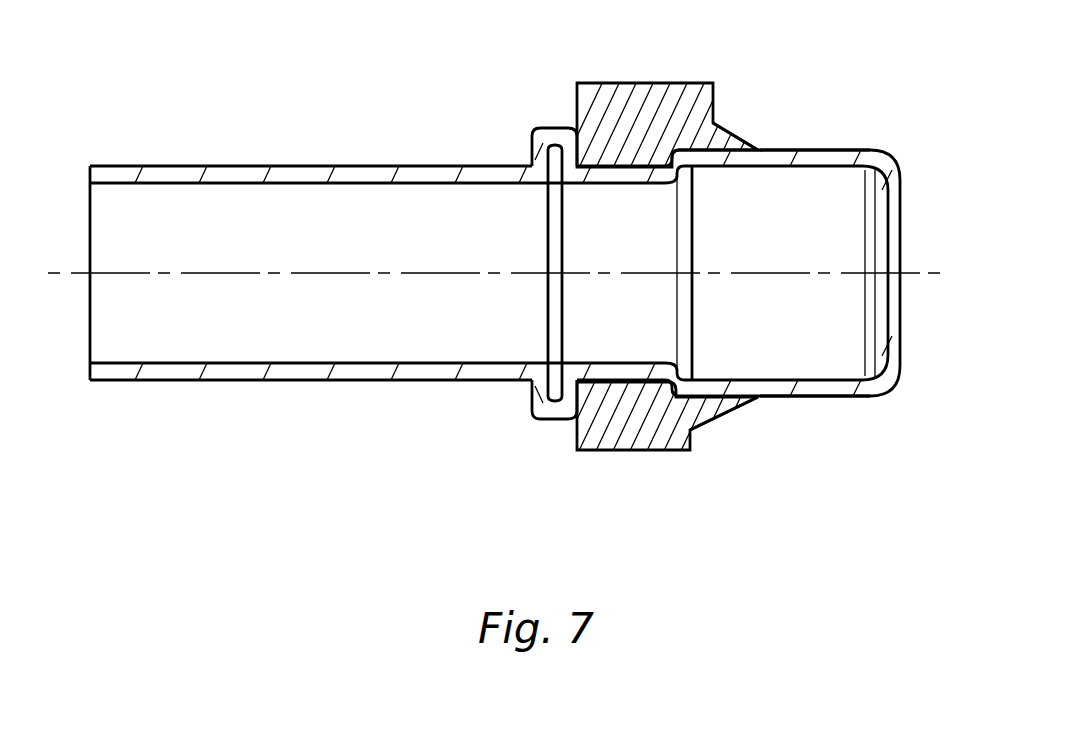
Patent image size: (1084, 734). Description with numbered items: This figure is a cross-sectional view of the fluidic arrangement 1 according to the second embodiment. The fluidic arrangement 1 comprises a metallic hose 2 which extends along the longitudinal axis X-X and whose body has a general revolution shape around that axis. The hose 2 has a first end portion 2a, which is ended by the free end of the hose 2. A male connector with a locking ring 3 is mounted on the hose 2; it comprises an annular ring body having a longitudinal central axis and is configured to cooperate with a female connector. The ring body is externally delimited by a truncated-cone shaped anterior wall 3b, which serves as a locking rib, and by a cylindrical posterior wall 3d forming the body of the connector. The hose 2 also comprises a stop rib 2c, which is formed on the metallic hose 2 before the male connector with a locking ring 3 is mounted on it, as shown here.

The fluidic arrangement 1 is at (226, 484).
The hose 2 is at (285, 173).
The first end portion 2a is at (770, 390).
The stop rib 2c is at (538, 132).
The male connector with a locking ring 3 is at (672, 228).
The truncated-cone shaped anterior wall 3b is at (730, 133).
The cylindrical posterior wall 3d is at (612, 130).